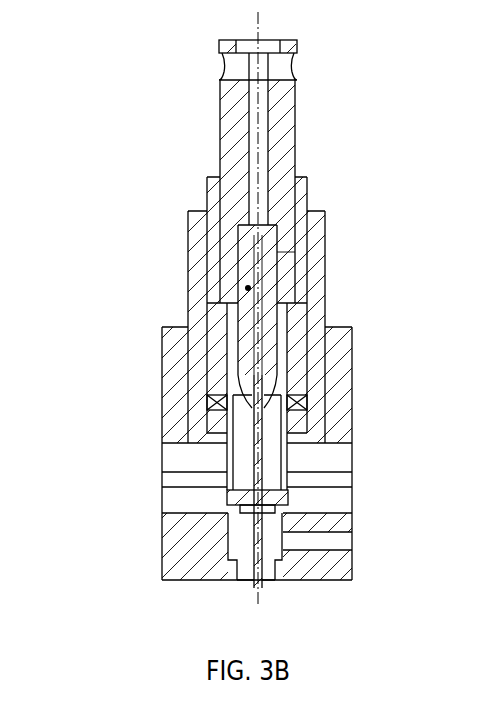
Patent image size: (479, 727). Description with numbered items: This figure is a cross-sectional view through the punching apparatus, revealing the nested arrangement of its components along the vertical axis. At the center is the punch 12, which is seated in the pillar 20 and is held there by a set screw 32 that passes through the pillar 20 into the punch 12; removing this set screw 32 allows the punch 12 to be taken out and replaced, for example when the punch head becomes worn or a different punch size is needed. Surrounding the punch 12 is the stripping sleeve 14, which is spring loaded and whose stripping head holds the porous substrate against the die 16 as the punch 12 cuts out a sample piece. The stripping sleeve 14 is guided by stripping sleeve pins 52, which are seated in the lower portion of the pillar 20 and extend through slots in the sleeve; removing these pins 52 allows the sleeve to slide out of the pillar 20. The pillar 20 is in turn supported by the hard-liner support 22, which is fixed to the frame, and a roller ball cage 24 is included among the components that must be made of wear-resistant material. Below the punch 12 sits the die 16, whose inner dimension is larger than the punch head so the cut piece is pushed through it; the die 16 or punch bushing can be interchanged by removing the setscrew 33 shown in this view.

The punch 12 is at (248, 288).
The stripping sleeve 14 is at (288, 480).
The die 16 is at (270, 543).
The pillar 20 is at (298, 113).
The hard-liner support 22 is at (328, 295).
The roller ball cage 24 is at (308, 202).
The set screw 32 is at (290, 256).
The setscrew 33 is at (340, 540).
The stripping sleeve pin 52 is at (310, 393).